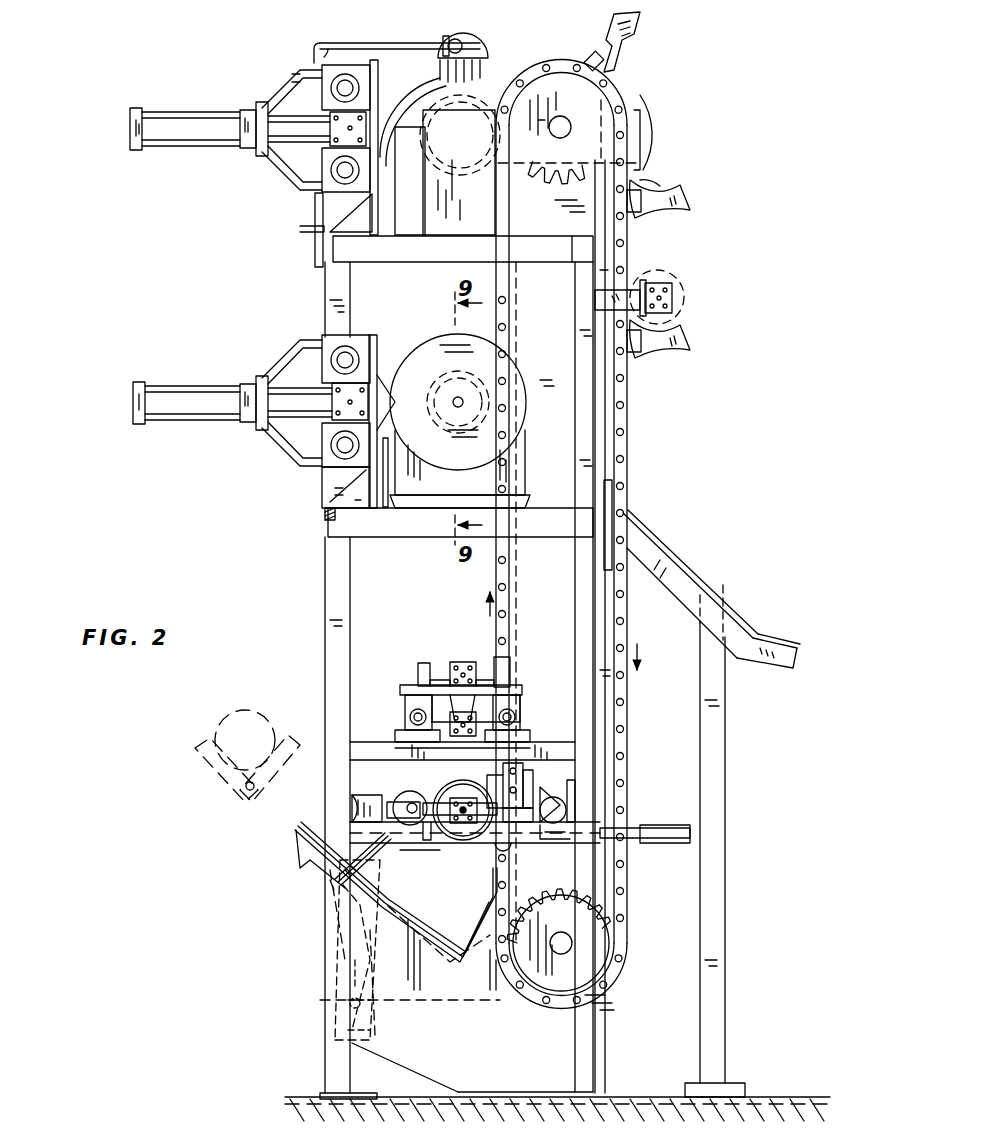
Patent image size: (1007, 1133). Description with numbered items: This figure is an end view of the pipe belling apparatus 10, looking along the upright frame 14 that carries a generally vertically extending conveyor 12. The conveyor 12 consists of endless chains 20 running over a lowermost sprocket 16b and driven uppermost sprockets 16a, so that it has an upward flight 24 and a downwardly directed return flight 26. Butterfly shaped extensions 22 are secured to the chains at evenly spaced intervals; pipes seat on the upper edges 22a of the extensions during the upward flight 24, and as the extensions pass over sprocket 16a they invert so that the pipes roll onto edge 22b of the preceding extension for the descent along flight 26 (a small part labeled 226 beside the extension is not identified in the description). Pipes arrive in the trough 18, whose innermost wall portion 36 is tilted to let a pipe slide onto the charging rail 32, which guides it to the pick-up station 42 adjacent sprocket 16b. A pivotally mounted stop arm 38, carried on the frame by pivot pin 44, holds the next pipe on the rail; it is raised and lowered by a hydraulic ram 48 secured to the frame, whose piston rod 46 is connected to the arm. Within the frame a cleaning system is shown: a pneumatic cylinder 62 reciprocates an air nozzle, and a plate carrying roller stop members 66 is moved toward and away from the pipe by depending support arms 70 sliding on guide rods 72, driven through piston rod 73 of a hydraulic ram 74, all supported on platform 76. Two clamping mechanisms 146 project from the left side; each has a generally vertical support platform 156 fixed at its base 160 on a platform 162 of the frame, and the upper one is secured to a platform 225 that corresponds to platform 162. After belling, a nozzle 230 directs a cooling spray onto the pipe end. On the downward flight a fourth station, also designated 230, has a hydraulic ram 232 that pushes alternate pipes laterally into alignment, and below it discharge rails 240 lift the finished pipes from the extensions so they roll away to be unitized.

The pipe belling apparatus 10 is at (715, 170).
The conveyor 12 is at (608, 534).
The frame 14 is at (328, 578).
The uppermost sprockets 16a is at (592, 112).
The lowermost sprocket 16b is at (618, 963).
The trough 18 is at (204, 770).
The endless chains 20 is at (625, 498).
The butterfly shaped extensions 22 is at (680, 194).
The upper edges of extensions 22a is at (636, 30).
The edge of extensions 22b is at (684, 320).
The upward flight 24 is at (465, 688).
The downwardly directed flight 26 is at (640, 484).
The charging rail 32 is at (318, 856).
The innermost wall portion 36 is at (261, 806).
The stop arm 38 is at (384, 862).
The pick-up station 42 is at (460, 905).
The pivot pin 44 is at (345, 900).
The piston rod 46 is at (382, 893).
The hydraulic ram 48 is at (340, 972).
The pneumatic cylinder 62 is at (462, 668).
The stop members 66 is at (438, 650).
The depending support arms 70 is at (408, 697).
The guide rods 72 is at (410, 720).
The piston rod 73 is at (490, 706).
The hydraulic ram 74 is at (462, 735).
The support platform 76 is at (398, 740).
The clamping apparatus 146 is at (234, 156).
The support platform 156 is at (190, 378).
The base 160 is at (342, 500).
The platform 162 is at (330, 512).
The platform 225 is at (350, 237).
The pawl 226 is at (680, 192).
The nozzle 230 is at (486, 42).
The hydraulic ram 232 is at (674, 297).
The discharge rails 240 is at (692, 584).